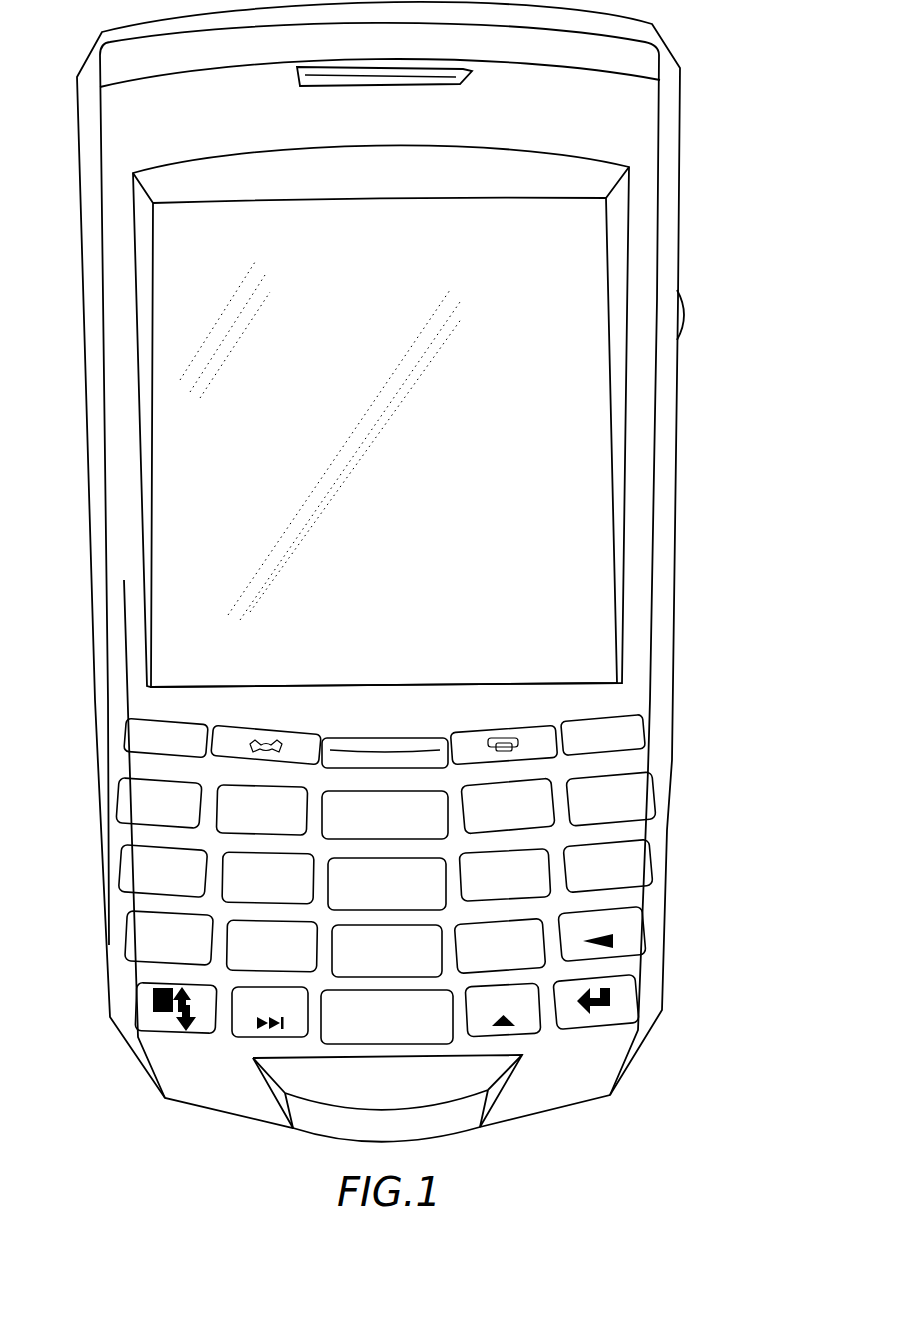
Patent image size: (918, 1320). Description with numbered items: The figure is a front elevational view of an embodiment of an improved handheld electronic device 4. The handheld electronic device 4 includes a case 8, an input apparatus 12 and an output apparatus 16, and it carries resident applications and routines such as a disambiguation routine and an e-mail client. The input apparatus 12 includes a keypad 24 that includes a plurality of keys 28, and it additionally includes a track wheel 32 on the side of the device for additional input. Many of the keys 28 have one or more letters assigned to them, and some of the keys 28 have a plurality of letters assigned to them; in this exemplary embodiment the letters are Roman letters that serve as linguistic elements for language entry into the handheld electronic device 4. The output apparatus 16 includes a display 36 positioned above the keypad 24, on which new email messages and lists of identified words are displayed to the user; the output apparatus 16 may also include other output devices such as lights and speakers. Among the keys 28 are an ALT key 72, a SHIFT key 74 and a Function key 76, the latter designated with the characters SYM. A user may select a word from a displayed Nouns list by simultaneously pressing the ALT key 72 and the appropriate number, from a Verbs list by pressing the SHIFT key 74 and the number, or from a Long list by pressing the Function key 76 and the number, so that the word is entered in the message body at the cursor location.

The handheld electronic device 4 is at (52, 88).
The case 8 is at (662, 372).
The input apparatus 12 is at (668, 758).
The output apparatus 16 is at (452, 100).
The keypad 24 is at (660, 824).
The keys 28 is at (122, 937).
The track wheel 32 is at (806, 312).
The display 36 is at (313, 236).
The ALT key 72 is at (135, 1002).
The SHIFT key 74 is at (640, 995).
The Function key 76 is at (128, 945).